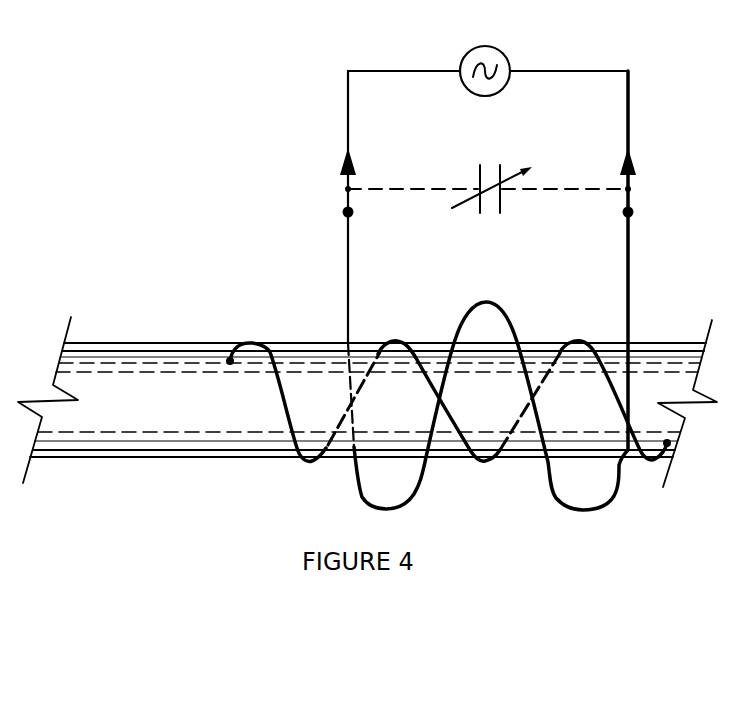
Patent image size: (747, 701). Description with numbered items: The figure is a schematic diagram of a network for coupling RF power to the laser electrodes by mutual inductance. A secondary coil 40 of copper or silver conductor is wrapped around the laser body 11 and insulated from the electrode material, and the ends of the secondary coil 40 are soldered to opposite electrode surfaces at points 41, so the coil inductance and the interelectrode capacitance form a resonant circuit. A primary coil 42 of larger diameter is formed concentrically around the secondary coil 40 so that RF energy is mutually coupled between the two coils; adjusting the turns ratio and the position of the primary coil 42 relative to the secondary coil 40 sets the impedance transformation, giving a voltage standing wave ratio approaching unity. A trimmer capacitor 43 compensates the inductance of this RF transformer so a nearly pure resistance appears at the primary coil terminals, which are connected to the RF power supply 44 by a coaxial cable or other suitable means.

The laser body 11 is at (367, 394).
The secondary coil 40 is at (448, 381).
The points 41 is at (446, 392).
The primary coil 42 is at (510, 310).
The trimmer capacitor 43 is at (488, 168).
The RF power supply 44 is at (504, 51).